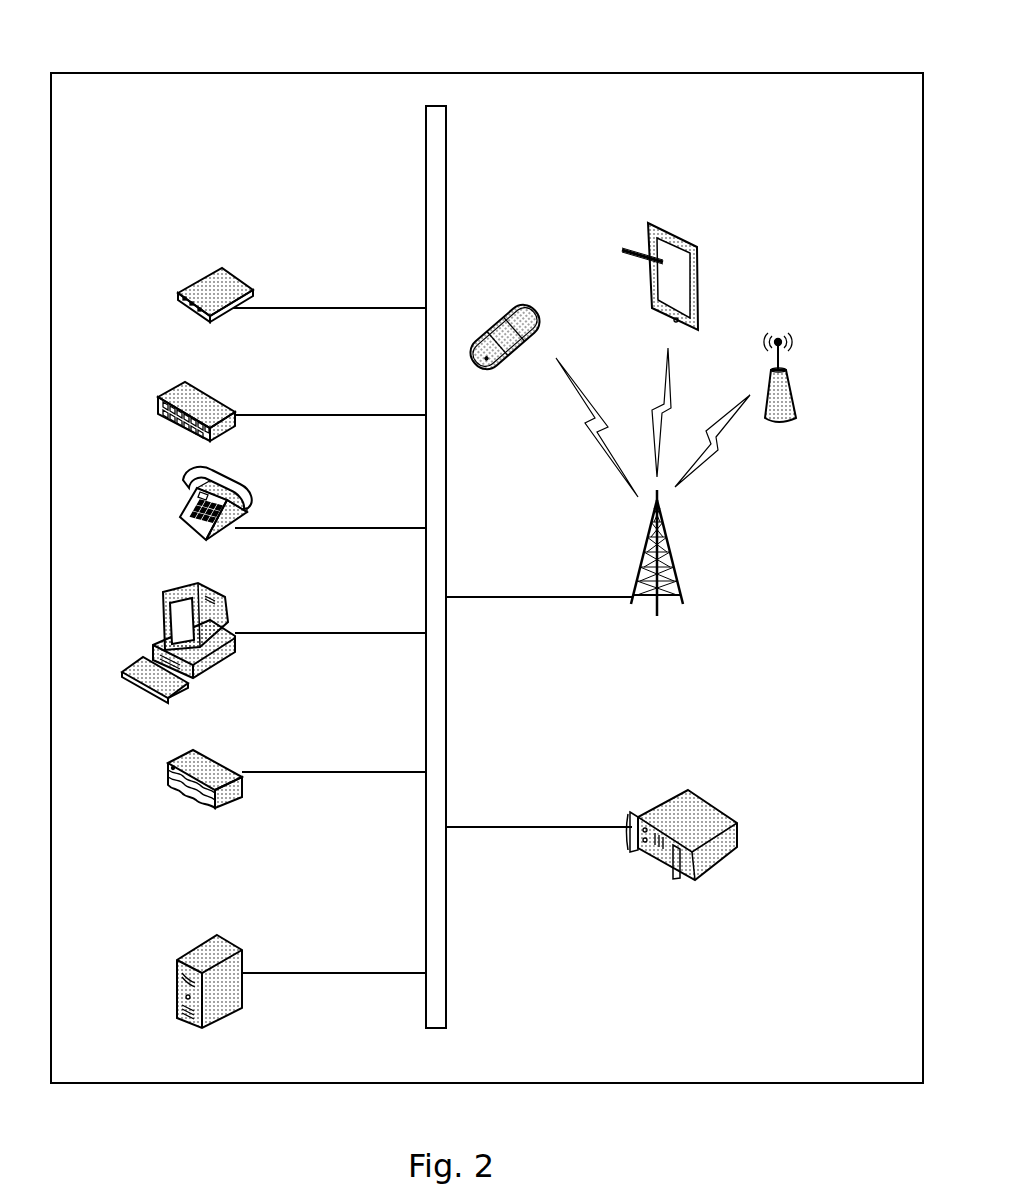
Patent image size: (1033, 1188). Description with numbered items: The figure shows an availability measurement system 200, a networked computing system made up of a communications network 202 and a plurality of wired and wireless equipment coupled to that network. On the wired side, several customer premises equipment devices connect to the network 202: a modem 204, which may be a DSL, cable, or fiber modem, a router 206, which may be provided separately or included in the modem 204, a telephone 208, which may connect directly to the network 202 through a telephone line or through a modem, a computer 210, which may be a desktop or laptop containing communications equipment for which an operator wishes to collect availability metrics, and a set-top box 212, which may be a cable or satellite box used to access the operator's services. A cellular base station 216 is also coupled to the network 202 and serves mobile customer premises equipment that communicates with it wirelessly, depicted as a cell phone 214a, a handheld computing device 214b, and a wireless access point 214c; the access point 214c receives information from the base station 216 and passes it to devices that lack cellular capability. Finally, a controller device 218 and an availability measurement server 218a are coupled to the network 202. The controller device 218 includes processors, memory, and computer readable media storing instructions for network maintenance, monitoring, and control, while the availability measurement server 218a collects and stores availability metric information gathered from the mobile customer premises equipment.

The availability measurement system 200 is at (363, 46).
The communications network 202 is at (426, 157).
The modem 204 is at (178, 293).
The router 206 is at (158, 396).
The telephone 208 is at (180, 516).
The computer 210 is at (163, 596).
The set-top box 212 is at (165, 770).
The cell phone 214a is at (540, 314).
The handheld computing device 214b is at (700, 247).
The wireless access point 214c is at (796, 390).
The cellular base station 216 is at (680, 592).
The controller device 218 is at (737, 826).
The availability measurement server 218a is at (177, 960).